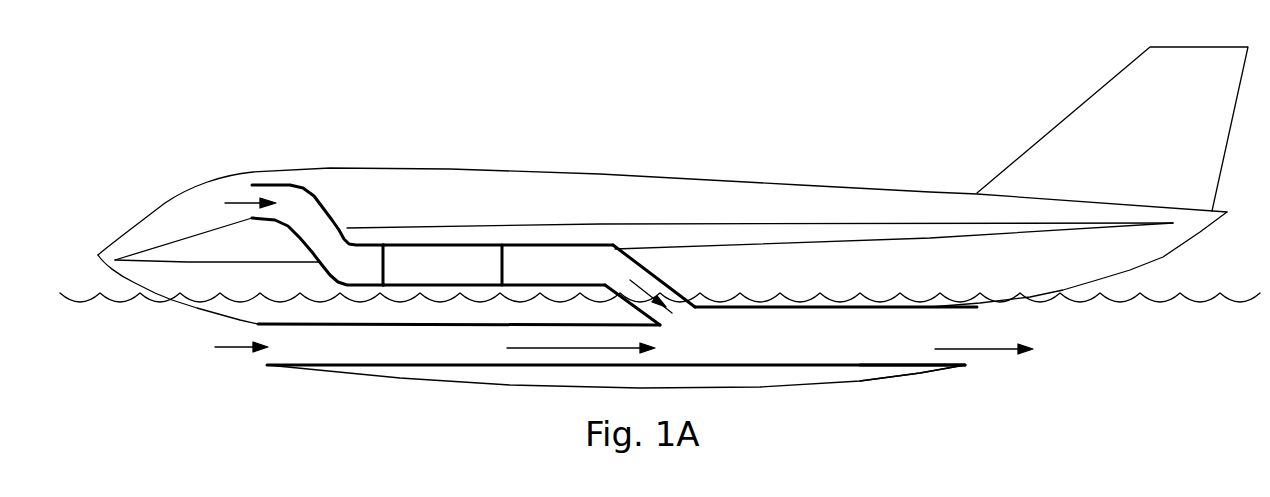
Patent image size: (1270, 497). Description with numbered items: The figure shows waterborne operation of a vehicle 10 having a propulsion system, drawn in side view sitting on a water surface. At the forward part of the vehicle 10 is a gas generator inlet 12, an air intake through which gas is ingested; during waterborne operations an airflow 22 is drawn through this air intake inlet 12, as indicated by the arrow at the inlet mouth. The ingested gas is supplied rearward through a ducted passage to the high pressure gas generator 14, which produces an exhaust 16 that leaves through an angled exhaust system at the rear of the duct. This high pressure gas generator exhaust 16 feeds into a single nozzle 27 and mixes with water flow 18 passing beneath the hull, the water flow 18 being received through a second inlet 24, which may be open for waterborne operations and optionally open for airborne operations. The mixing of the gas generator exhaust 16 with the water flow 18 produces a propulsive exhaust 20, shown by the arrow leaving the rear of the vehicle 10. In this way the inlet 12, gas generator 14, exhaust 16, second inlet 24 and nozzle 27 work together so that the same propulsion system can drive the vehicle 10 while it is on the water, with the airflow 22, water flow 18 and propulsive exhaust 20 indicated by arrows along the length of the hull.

The vehicle 10 is at (598, 172).
The gas generator inlet 12 is at (297, 185).
The gas generator 14 is at (423, 244).
The gas generator exhaust 16 is at (662, 278).
The water flow 18 is at (528, 348).
The propulsive exhaust 20 is at (955, 346).
The airflow 22 is at (240, 202).
The second inlet 24 is at (265, 366).
The nozzle 27 is at (903, 353).